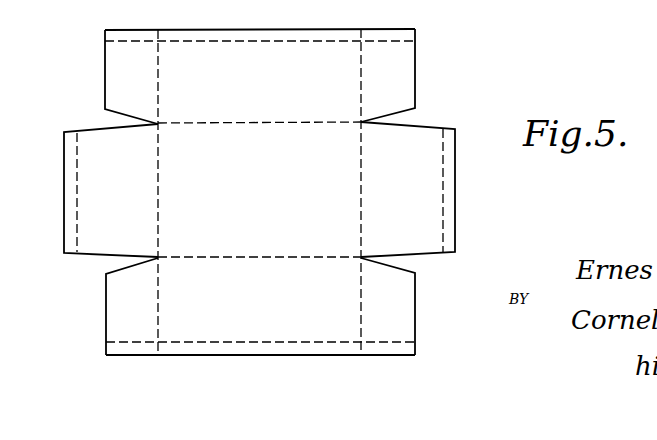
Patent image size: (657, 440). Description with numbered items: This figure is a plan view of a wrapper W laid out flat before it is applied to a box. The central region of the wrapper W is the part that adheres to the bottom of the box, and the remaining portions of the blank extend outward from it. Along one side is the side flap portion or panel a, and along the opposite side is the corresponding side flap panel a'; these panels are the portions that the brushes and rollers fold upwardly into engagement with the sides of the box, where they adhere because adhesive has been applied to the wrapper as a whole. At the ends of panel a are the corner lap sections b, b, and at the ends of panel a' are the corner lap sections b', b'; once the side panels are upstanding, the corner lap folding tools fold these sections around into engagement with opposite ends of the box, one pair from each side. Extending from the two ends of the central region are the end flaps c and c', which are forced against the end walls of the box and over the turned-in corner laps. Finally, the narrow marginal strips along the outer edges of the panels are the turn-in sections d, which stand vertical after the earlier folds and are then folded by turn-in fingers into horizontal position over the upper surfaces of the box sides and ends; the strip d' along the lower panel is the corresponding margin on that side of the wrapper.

The side flap portion or panel a is at (260, 57).
The side flap portion or panel a' is at (260, 321).
The corner lap section b is at (260, 76).
The corner lap section b' is at (260, 306).
The end flap c is at (111, 190).
The end flap c' is at (408, 189).
The wrapper W is at (259, 192).
The turn-in section d is at (257, 126).
The bottom fold line / glue flap margin d' is at (260, 363).